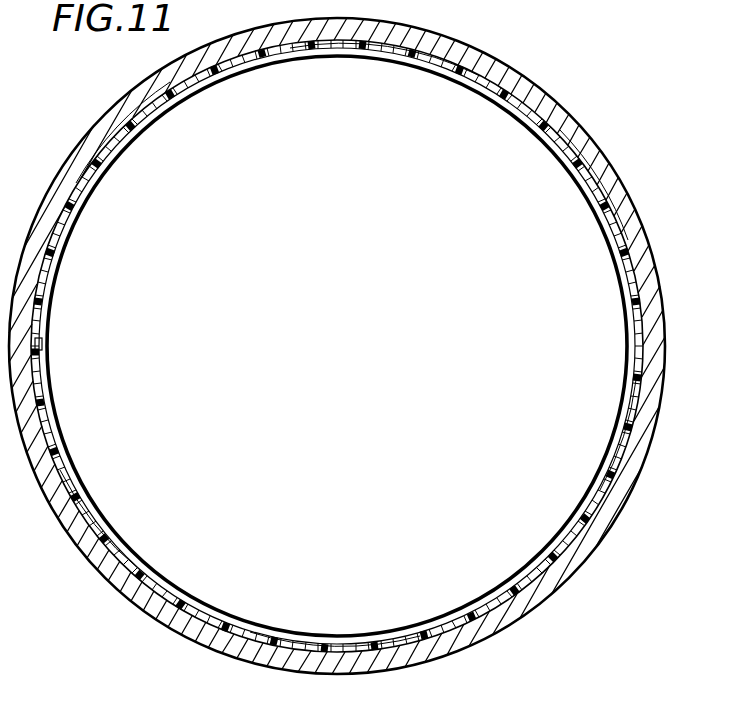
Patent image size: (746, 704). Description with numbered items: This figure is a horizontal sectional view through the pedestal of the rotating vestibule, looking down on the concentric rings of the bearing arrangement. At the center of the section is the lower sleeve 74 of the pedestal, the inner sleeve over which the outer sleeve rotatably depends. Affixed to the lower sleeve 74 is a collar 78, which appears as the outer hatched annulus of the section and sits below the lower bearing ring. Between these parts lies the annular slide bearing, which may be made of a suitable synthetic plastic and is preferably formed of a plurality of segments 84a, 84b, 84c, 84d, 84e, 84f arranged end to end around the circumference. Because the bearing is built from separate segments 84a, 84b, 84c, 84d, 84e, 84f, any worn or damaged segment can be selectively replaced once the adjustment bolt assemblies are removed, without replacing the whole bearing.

The lower sleeve 74 is at (42, 344).
The collar 78 is at (100, 565).
The bearing segment 84a is at (114, 152).
The bearing segment 84b is at (433, 57).
The bearing segment 84c is at (604, 223).
The bearing segment 84d is at (616, 441).
The bearing segment 84e is at (332, 642).
The bearing segment 84f is at (93, 523).